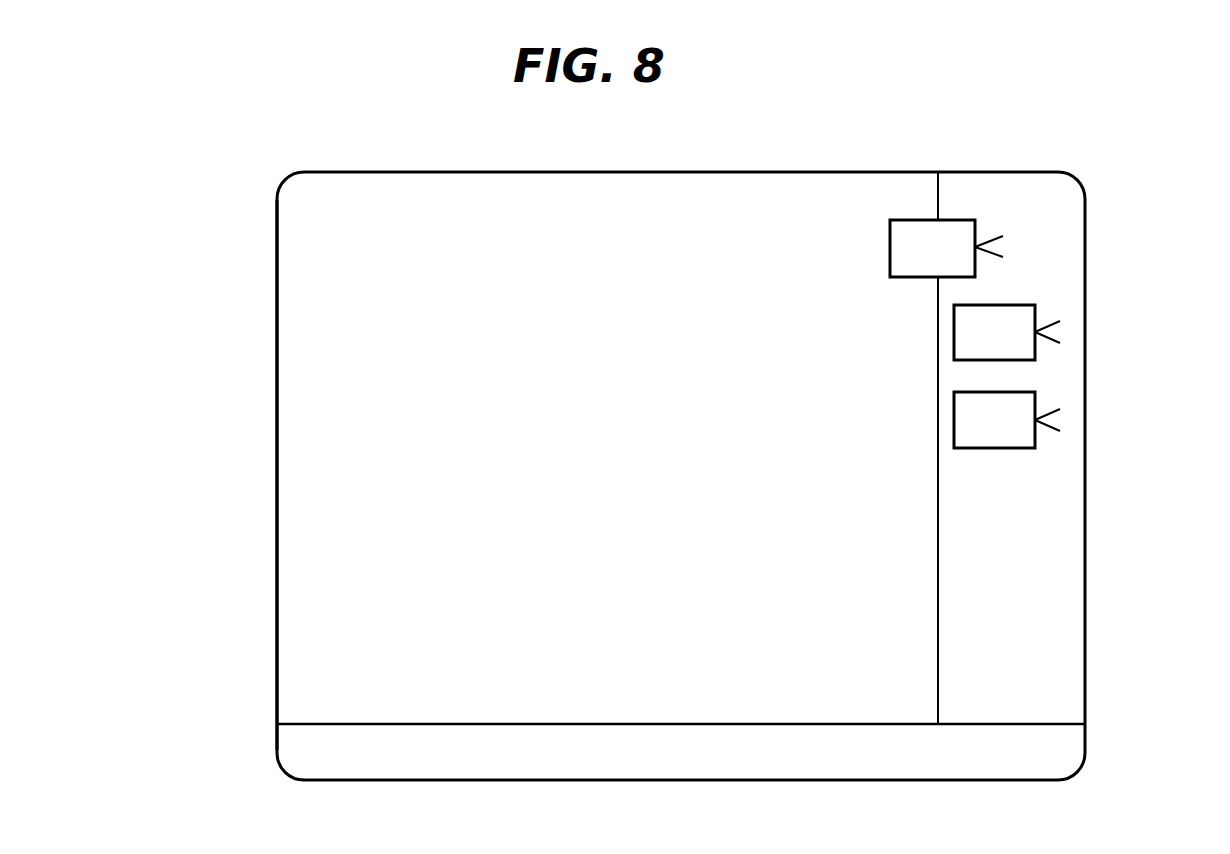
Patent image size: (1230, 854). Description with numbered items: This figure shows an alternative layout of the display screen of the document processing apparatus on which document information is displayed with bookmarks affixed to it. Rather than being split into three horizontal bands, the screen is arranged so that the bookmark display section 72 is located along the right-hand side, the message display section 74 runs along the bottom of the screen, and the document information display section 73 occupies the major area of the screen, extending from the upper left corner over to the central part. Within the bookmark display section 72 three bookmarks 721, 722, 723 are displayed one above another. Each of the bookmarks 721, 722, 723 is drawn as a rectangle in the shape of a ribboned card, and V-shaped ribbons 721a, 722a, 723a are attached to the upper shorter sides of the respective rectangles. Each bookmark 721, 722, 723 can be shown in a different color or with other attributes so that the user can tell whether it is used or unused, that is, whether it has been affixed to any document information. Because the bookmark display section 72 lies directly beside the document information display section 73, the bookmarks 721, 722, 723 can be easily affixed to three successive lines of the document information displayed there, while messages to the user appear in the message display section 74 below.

The bookmark display section 72 is at (1087, 607).
The document information display section 73 is at (276, 317).
The message display section 74 is at (278, 738).
The bookmark 721 is at (913, 230).
The V-shaped ribbon 721a is at (1000, 237).
The bookmark 722 is at (1018, 310).
The V-shaped ribbon 722a is at (1058, 343).
The bookmark 723 is at (1013, 440).
The V-shaped ribbon 723a is at (1060, 430).